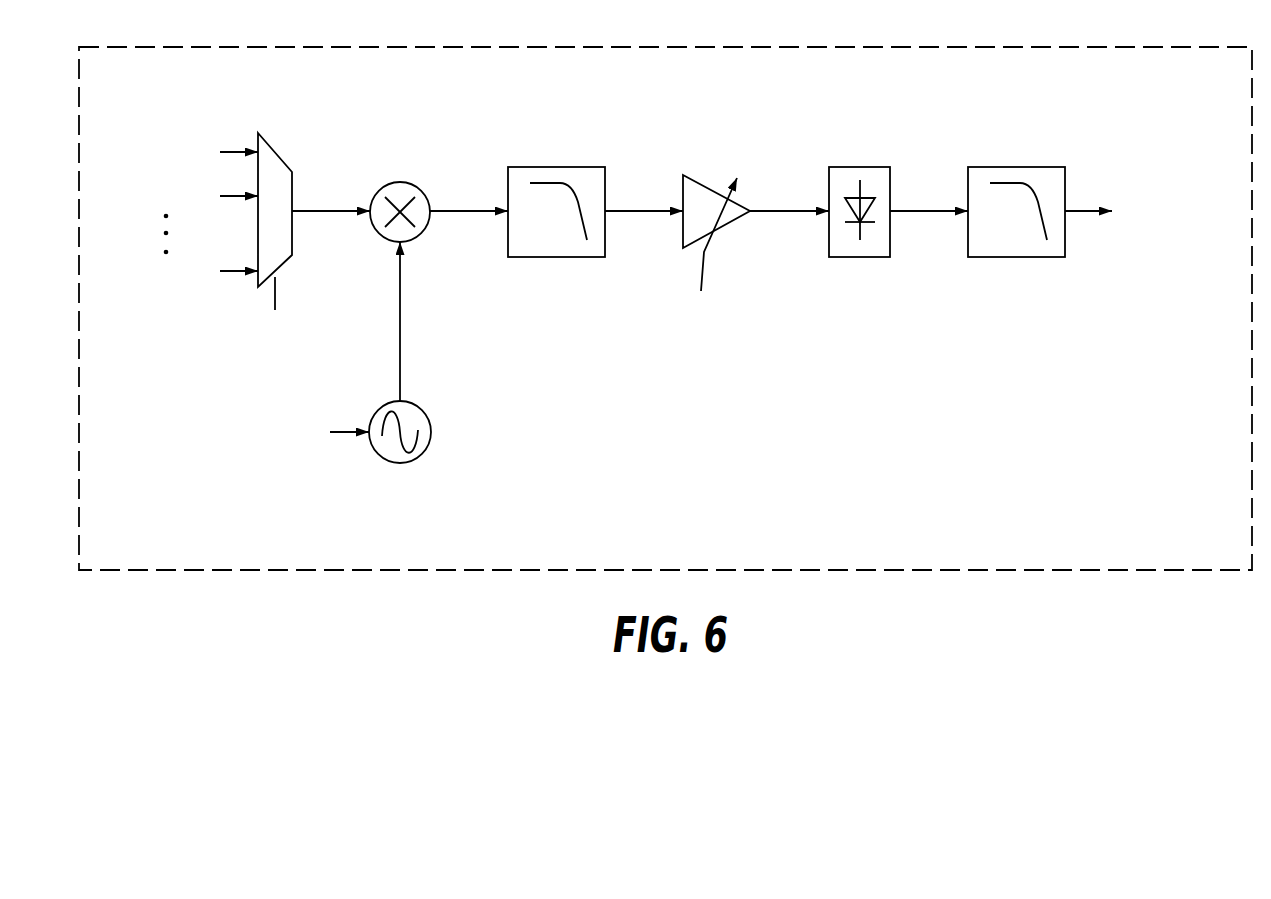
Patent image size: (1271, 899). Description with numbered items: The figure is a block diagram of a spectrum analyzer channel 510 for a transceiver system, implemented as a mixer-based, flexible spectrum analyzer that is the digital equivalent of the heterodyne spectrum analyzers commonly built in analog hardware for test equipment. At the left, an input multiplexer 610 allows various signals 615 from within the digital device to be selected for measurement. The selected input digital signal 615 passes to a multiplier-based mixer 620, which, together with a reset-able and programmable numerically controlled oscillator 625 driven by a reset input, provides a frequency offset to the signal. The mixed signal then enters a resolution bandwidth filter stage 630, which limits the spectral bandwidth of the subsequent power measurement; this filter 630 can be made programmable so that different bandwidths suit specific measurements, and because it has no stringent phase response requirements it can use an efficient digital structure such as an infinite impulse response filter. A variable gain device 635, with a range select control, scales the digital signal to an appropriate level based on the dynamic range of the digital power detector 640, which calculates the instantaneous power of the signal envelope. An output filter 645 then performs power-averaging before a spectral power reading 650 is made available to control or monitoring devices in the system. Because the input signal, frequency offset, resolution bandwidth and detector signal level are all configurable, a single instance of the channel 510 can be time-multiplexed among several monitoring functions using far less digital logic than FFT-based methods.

The spectrum analyzer channel 510 is at (682, 47).
The signals 615 is at (157, 100).
The input multiplexer 610 is at (275, 154).
The multiplier-based mixer 620 is at (424, 236).
The numerically controlled oscillator 625 is at (432, 432).
The resolution bandwidth filter 630 is at (559, 166).
The variable gain device 635 is at (727, 226).
The digital power detector 640 is at (861, 166).
The output filter 645 is at (1019, 166).
The spectral power reading 650 is at (1179, 130).